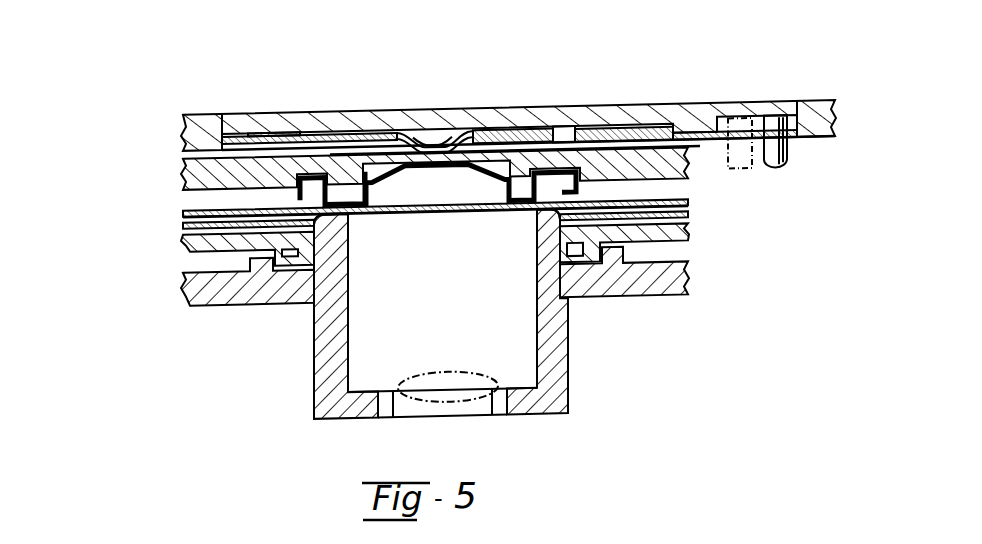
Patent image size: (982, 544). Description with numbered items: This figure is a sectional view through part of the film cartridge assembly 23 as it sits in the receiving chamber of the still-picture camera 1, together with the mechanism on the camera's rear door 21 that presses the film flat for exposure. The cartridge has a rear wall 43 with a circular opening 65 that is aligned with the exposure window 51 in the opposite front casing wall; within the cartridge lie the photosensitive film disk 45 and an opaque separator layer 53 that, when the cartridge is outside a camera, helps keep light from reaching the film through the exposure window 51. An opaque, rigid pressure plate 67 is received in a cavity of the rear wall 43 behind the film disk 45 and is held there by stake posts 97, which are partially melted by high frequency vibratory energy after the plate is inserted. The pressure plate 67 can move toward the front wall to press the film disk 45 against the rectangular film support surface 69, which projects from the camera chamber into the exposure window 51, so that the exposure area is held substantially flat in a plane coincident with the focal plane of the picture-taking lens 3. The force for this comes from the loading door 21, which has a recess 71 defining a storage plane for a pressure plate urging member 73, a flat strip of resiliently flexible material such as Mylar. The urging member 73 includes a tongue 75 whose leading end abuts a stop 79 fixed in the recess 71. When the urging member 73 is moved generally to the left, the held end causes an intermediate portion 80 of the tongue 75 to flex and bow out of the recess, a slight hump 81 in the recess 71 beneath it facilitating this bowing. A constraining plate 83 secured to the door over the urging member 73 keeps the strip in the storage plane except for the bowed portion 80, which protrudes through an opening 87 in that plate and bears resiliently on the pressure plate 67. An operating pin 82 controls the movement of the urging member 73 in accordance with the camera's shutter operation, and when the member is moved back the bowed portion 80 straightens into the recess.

The still-picture camera 1 is at (255, 318).
The picture-taking lens 3 is at (443, 380).
The rear door 21 is at (200, 113).
The film cartridge assembly 23 is at (180, 242).
The rear wall 43 is at (186, 178).
The film disk 45 is at (186, 214).
The exposure window 51 is at (346, 252).
The separator layer 53 is at (691, 215).
The circular opening 65 is at (338, 138).
The pressure plate 67 is at (422, 168).
The film support surface 69 is at (338, 226).
The recess 71 is at (243, 112).
The pressure plate urging member 73 is at (703, 128).
The tongue 75 is at (509, 127).
The stop 79 is at (575, 128).
The intermediate portion 80 is at (438, 152).
The hump 81 is at (421, 132).
The operating pin 82 is at (776, 165).
The constraining plate 83 is at (616, 128).
The opening 87 is at (394, 134).
The stake posts 97 is at (328, 202).